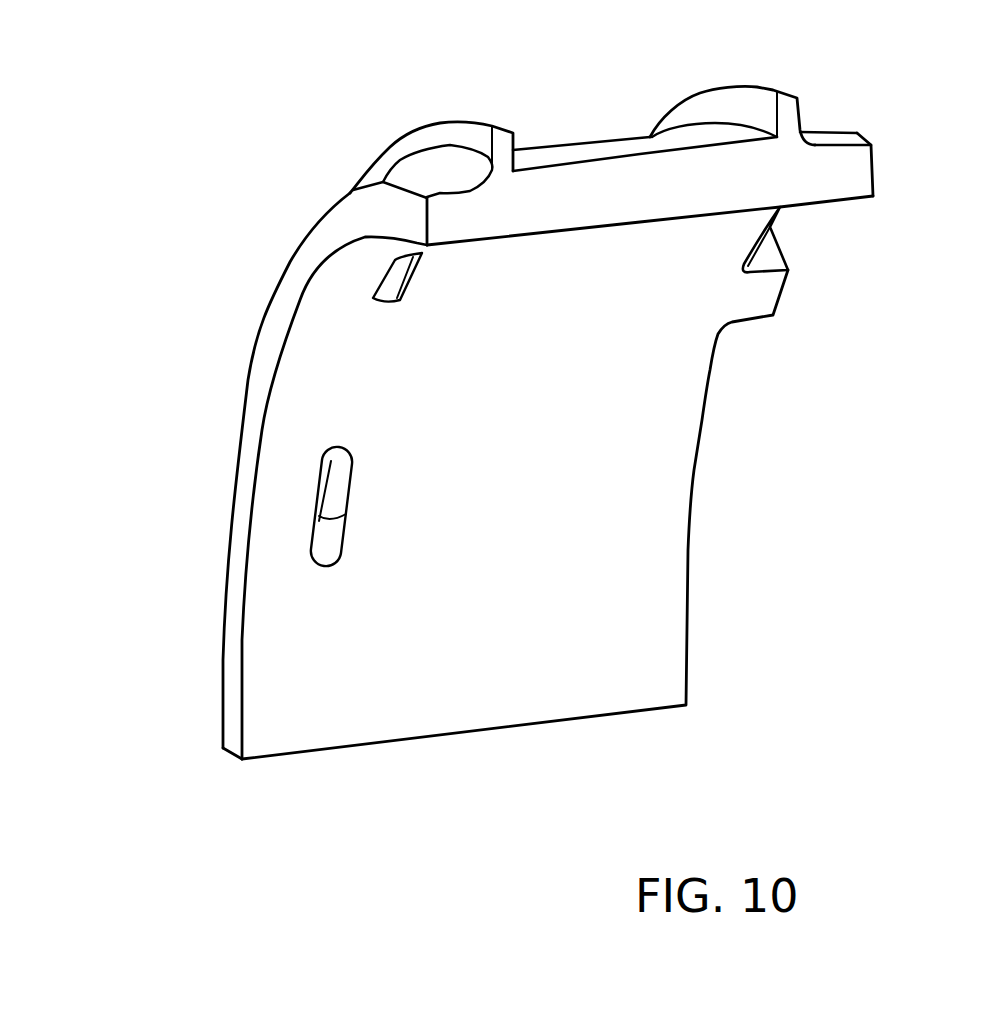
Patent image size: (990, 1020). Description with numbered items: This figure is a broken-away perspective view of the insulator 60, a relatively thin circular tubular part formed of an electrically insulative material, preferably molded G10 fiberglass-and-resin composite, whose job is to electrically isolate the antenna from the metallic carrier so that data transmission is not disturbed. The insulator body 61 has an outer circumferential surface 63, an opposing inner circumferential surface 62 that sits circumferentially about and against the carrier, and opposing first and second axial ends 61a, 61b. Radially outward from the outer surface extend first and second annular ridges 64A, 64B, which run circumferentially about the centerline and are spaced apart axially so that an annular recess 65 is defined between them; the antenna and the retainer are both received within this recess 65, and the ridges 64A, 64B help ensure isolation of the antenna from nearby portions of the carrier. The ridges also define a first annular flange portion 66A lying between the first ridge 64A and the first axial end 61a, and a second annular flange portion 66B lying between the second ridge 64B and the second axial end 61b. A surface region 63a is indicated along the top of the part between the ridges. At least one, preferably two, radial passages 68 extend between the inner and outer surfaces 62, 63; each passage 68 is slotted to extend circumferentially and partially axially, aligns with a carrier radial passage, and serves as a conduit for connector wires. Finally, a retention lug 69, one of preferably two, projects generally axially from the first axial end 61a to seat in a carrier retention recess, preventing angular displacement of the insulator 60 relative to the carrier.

The insulator 60 is at (255, 159).
The insulator body 61 is at (220, 498).
The first axial end 61a is at (878, 163).
The second axial end 61b is at (250, 398).
The inner circumferential surface 62 is at (602, 527).
The outer circumferential surface 63 is at (258, 313).
The top edge surface of bar 63a is at (630, 147).
The first annular ridge 64A is at (778, 90).
The second annular ridge 64B is at (483, 122).
The annular recess 65 is at (578, 128).
The first annular flange portion 66A is at (857, 180).
The second annular flange portion 66B is at (448, 228).
The radial passage 68 is at (393, 284).
The retention lug 69 is at (763, 296).